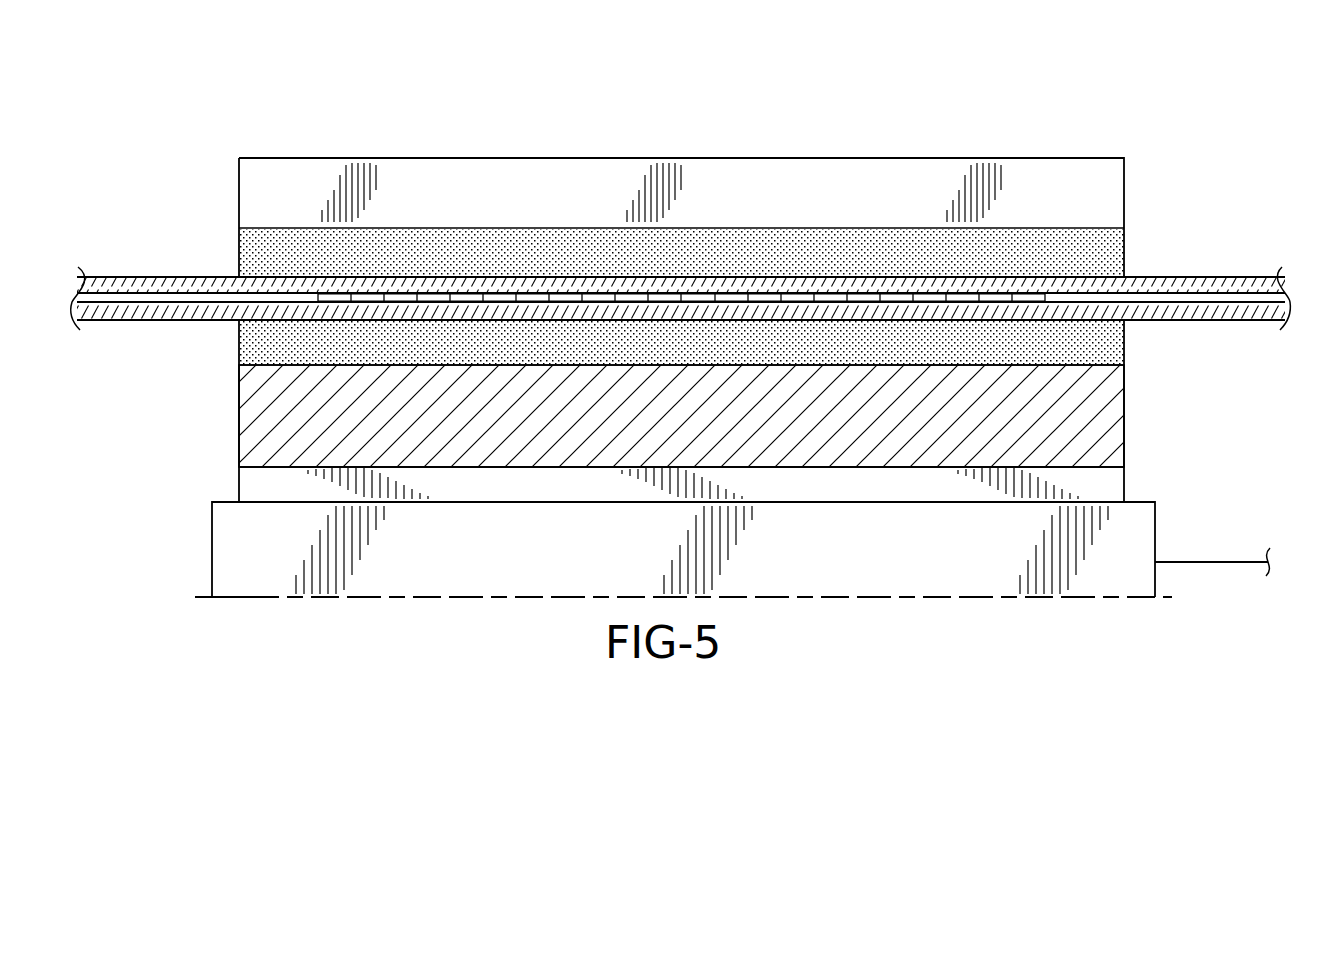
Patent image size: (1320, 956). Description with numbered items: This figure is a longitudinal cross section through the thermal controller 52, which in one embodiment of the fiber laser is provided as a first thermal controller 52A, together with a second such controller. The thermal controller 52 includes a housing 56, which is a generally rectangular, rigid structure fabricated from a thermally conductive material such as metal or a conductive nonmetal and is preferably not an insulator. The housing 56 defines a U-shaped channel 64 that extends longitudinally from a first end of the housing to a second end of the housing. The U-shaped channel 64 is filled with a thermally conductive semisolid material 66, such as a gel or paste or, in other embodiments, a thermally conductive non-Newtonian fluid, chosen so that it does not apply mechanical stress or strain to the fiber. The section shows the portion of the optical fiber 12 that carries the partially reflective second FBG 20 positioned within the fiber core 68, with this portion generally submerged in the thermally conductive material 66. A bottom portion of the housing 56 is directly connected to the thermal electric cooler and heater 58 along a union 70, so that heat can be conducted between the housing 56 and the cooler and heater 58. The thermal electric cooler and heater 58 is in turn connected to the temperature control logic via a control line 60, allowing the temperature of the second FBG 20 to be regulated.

The optical fiber 12 is at (681, 284).
The partially reflective second FBG 20 is at (497, 294).
The thermal controller 52 is at (681, 109).
The first thermal controller 52A is at (583, 155).
The housing 56 is at (503, 157).
The thermal electric cooler and heater 58 is at (1159, 529).
The control line 60 is at (1228, 563).
The U-shaped channel 64 is at (802, 181).
The thermally conductive semisolid material 66 is at (816, 242).
The fiber core 68 is at (171, 301).
The union 70 is at (888, 467).